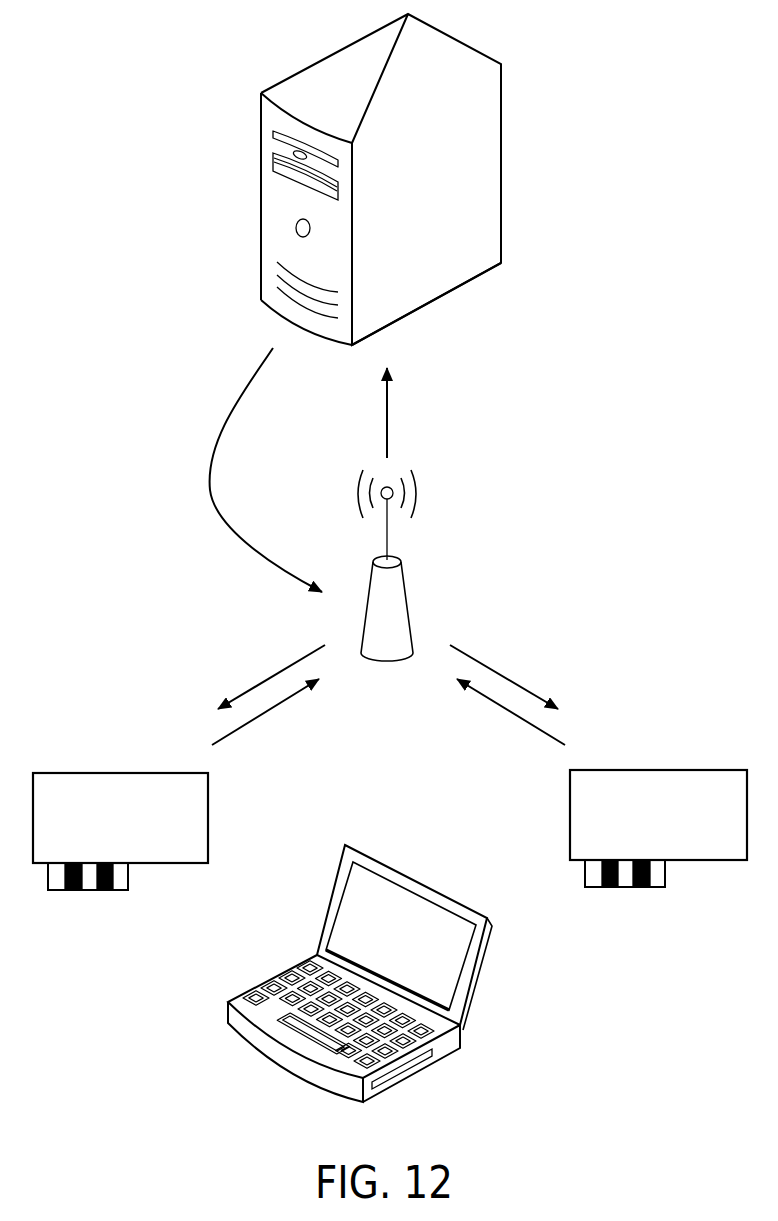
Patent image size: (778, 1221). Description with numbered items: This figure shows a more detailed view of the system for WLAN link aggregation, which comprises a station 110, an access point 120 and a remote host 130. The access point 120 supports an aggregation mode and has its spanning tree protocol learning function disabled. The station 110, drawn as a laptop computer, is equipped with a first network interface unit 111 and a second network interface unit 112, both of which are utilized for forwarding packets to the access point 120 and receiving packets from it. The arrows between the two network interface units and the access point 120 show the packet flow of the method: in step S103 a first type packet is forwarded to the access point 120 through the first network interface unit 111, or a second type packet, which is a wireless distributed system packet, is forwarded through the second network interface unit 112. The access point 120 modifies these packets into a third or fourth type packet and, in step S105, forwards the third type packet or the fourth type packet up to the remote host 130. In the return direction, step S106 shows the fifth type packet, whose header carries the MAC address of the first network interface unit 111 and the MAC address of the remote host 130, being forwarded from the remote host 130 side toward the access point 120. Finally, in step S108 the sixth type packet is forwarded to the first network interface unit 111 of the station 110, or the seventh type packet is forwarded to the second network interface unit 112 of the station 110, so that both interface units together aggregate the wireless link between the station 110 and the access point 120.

The station 110 is at (410, 1074).
The first network interface unit 111 is at (121, 773).
The second network interface unit 112 is at (658, 770).
The access point 120 is at (413, 606).
The remote host 130 is at (502, 163).
The step of forwarding first or second type packet to the AP S103 is at (265, 716).
The step of forwarding third or fourth type packet to the remote host S105 is at (388, 418).
The step of forwarding fifth type packet S106 is at (210, 488).
The step of forwarding sixth or seventh type packet to the station S108 is at (272, 678).